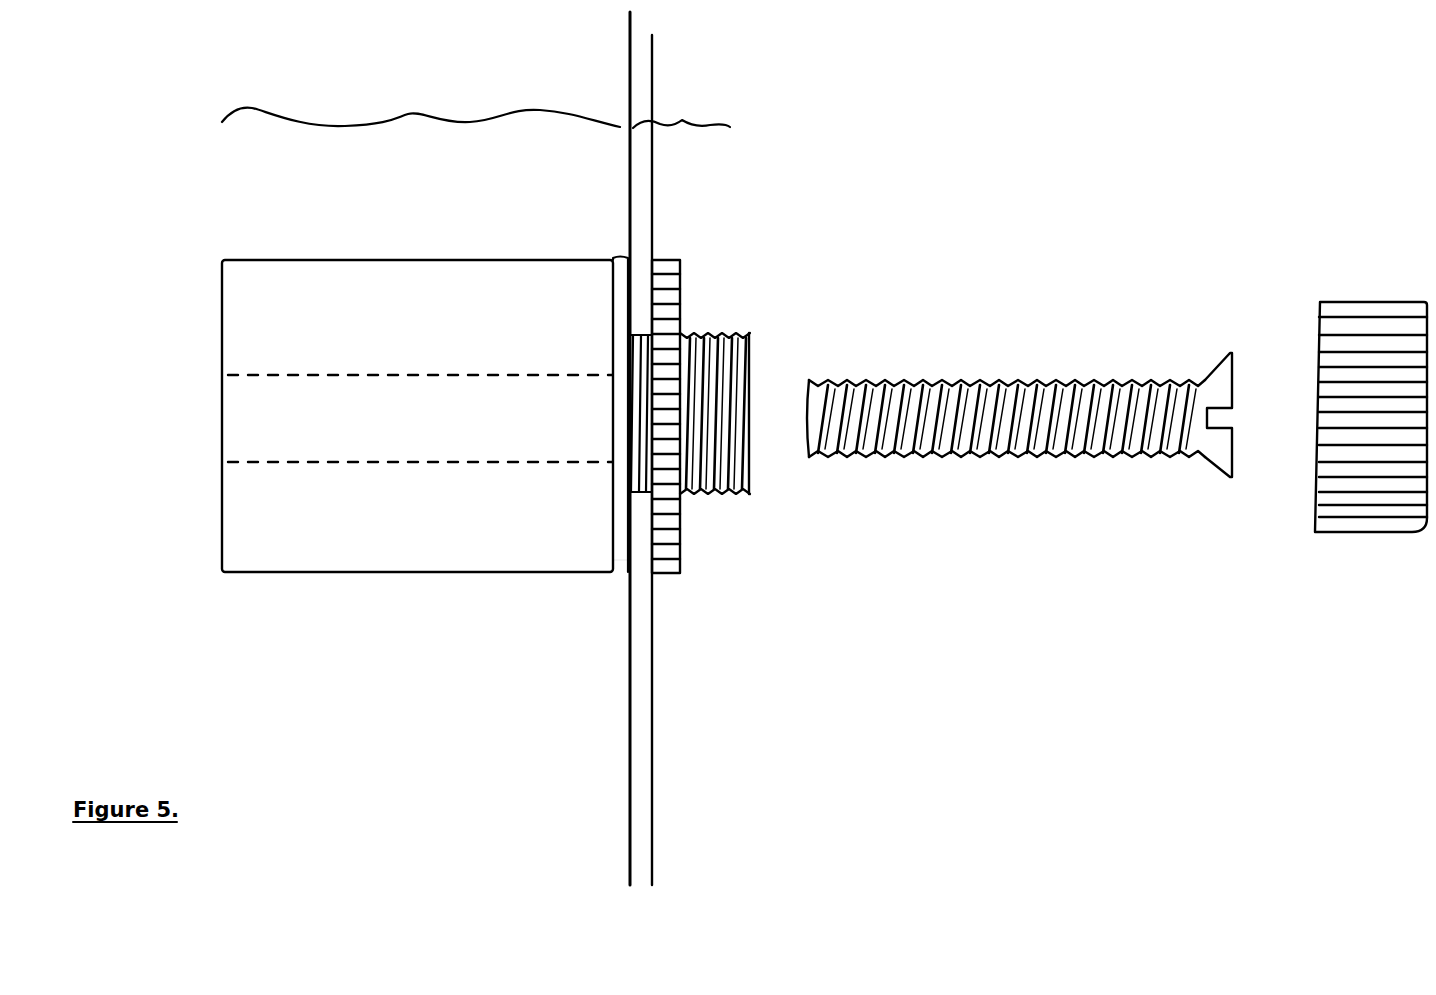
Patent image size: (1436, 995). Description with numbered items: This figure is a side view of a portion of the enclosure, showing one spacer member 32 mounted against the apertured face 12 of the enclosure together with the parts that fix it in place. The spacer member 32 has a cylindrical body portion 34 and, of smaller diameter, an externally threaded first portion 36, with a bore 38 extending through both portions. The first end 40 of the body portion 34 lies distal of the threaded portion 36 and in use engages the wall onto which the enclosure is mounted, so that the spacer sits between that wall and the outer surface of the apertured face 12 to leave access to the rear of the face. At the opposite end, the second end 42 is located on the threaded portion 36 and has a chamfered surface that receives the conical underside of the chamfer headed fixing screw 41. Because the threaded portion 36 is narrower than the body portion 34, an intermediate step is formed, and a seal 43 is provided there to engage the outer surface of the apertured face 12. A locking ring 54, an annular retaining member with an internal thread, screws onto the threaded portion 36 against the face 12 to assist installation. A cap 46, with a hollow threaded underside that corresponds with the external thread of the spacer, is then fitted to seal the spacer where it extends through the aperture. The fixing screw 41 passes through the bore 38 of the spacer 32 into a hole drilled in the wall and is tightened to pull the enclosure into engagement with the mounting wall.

The apertured face 12 is at (637, 748).
The spacer member 32 is at (359, 469).
The cylindrical body portion 34 is at (421, 100).
The externally threaded first portion 36 is at (681, 105).
The bore 38 is at (300, 460).
The first end 40 is at (220, 330).
The fixing screw 41 is at (952, 442).
The second end 42 is at (750, 488).
The seal 43 is at (620, 560).
The cap 46 is at (1363, 317).
The locking ring 54 is at (668, 267).